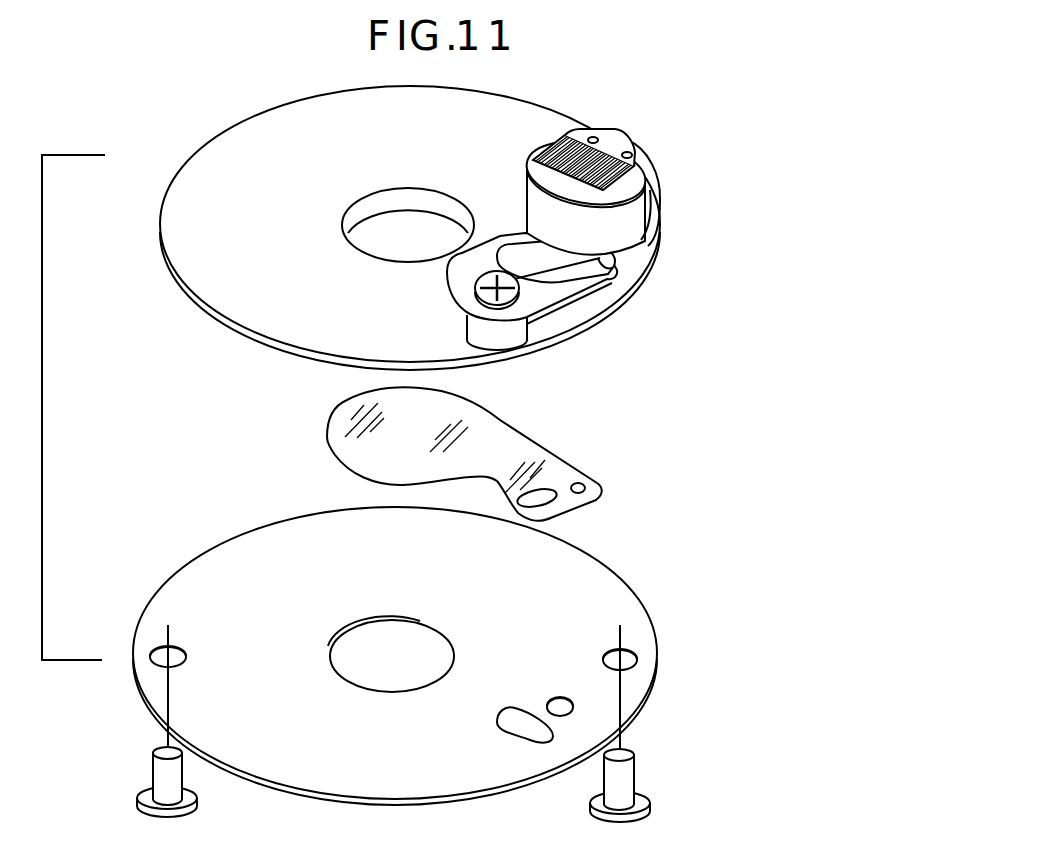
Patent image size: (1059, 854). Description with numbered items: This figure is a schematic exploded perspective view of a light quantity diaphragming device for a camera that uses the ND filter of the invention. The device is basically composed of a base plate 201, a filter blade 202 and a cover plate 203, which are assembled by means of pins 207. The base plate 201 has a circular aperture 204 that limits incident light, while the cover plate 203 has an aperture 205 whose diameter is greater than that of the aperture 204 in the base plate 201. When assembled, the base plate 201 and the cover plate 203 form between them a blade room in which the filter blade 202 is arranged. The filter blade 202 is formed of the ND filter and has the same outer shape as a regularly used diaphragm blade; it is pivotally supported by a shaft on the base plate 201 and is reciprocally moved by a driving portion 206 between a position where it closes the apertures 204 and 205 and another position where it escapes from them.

The base plate 201 is at (268, 290).
The filter blade 202 is at (498, 433).
The cover plate 203 is at (553, 583).
The aperture 204 is at (368, 208).
The aperture 205 is at (353, 627).
The driving portion 206 is at (626, 132).
The pins 207 is at (162, 778).